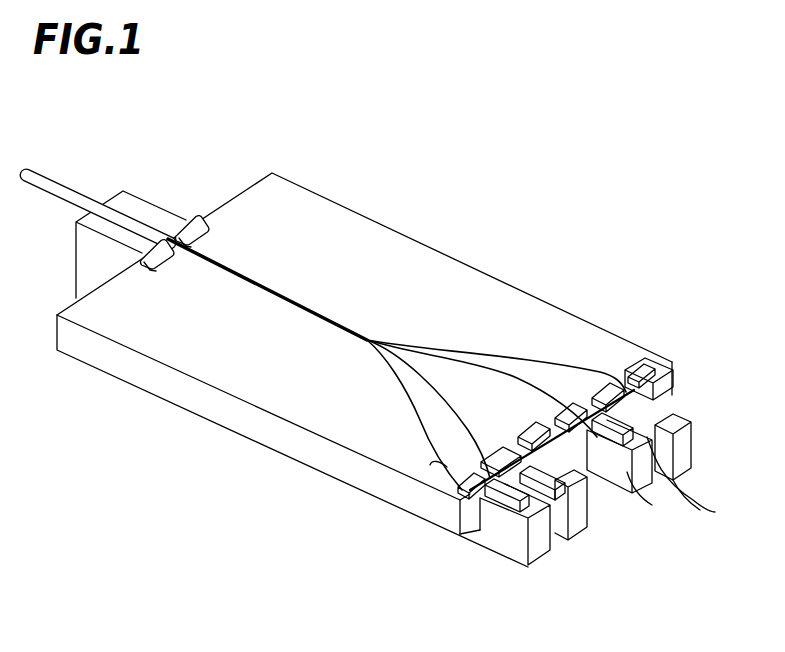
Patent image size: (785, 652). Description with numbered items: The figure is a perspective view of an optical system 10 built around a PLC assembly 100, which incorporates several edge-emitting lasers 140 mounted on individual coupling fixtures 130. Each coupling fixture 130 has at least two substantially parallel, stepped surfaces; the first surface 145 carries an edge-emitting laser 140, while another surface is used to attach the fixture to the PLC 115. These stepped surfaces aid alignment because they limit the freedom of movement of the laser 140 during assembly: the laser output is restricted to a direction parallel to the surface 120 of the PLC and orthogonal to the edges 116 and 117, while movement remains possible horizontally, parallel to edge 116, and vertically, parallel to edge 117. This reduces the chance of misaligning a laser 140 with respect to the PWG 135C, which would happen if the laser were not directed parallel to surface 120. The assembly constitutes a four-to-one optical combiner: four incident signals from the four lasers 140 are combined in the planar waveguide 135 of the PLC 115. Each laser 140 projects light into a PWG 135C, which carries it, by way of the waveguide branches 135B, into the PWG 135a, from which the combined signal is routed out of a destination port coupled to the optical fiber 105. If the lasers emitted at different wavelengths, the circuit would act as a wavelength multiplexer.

The optical system 10 is at (596, 112).
The PLC assembly 100 is at (310, 113).
The optical fiber 105 is at (77, 190).
The PLC 115 is at (390, 227).
The edge 116 is at (460, 488).
The edge 117 is at (462, 520).
The surface 120 is at (560, 327).
The coupling fixture 130 is at (558, 568).
The planar waveguide 135 is at (341, 297).
The PWG 135a is at (273, 247).
The fanned-out fiber portion 135B is at (367, 340).
The PWG 135C is at (450, 462).
The edge-emitting laser 140 is at (486, 486).
The first surface 145 is at (700, 512).